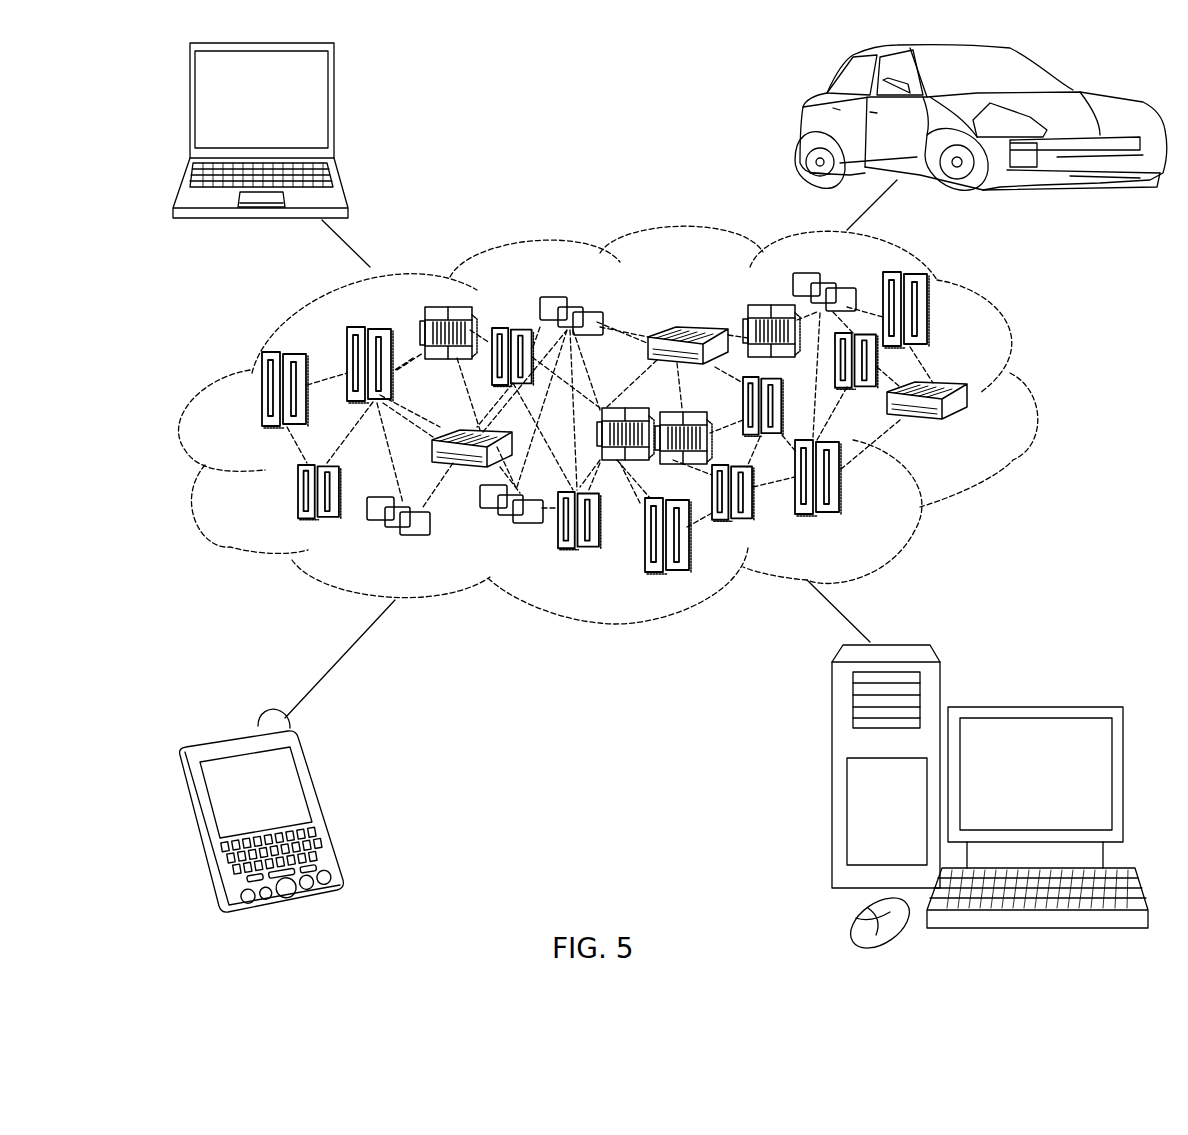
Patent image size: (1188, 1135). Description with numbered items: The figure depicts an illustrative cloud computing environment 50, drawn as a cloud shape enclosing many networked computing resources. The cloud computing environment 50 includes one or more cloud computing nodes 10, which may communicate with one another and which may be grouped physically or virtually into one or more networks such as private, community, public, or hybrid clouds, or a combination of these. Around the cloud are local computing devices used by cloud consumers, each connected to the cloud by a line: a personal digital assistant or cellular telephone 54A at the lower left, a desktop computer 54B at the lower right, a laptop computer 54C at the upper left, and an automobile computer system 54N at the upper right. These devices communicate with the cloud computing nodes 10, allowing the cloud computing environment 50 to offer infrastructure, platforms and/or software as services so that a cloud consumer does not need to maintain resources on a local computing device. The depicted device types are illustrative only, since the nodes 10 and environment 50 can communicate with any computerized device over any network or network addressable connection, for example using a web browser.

The laptop computer 54C is at (333, 108).
The automobile computer system 54N is at (803, 127).
The personal digital assistant or cellular telephone 54A is at (323, 807).
The desktop computer 54B is at (1033, 705).
The cloud computing environment 50 is at (1033, 400).
The cloud computing node 10 is at (975, 432).